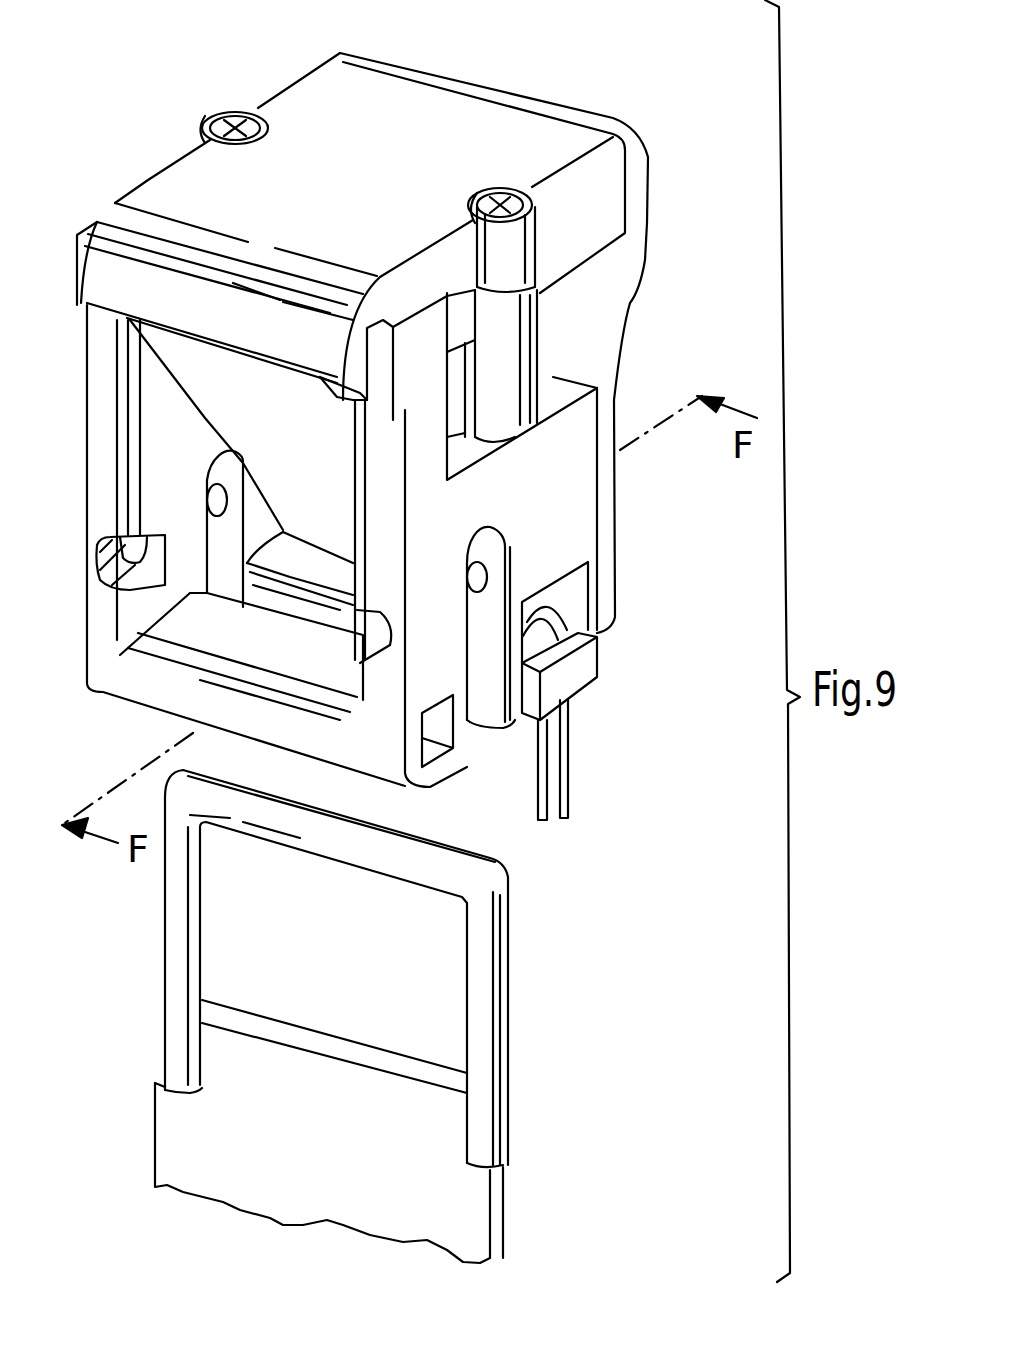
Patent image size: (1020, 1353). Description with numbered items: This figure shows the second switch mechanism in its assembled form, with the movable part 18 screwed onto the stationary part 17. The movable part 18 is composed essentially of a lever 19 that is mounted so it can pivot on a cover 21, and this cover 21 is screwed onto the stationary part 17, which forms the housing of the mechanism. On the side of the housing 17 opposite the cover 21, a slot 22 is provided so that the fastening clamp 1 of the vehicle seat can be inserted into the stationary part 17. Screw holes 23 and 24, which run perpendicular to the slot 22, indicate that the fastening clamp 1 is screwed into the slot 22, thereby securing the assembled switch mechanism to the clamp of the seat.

The fastening clamp 1 is at (507, 1033).
The stationary part 17 is at (620, 310).
The movable part 18 is at (152, 166).
The lever 19 is at (193, 386).
The cover 21 is at (462, 107).
The slot 22 is at (488, 707).
The screw hole 23 is at (103, 578).
The screw hole 24 is at (380, 627).